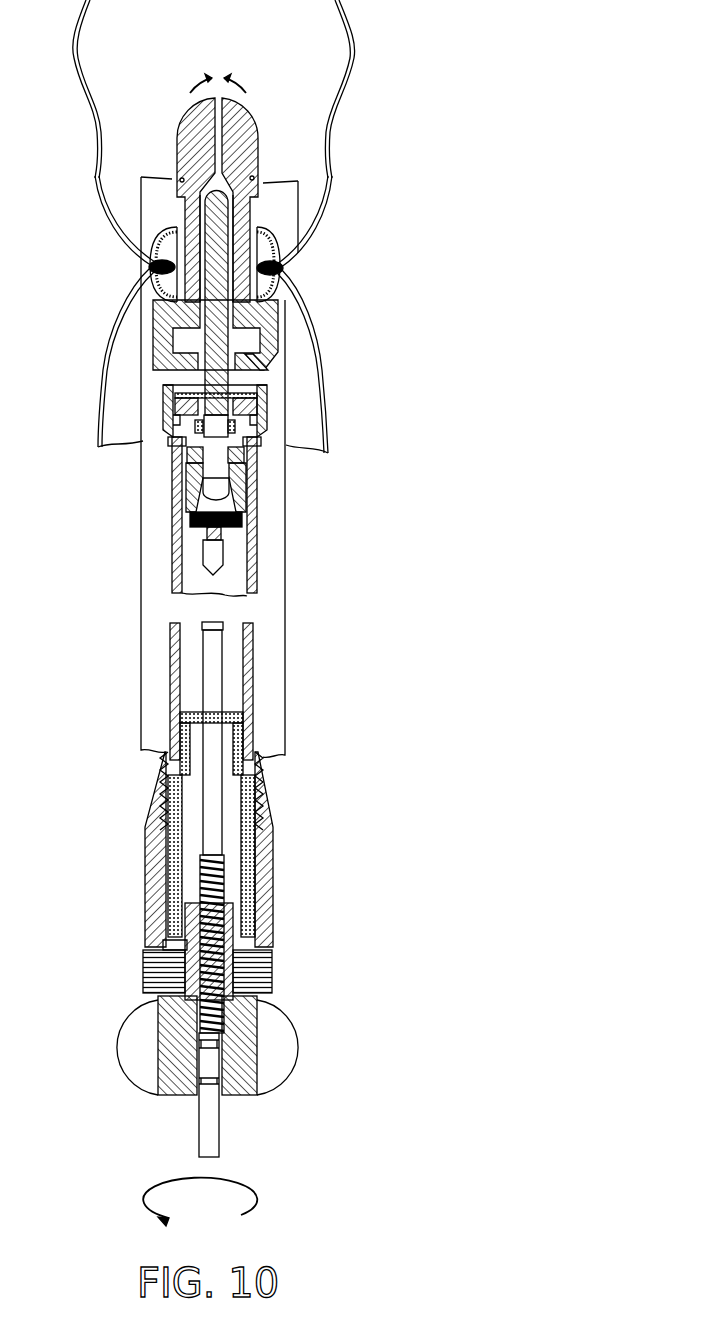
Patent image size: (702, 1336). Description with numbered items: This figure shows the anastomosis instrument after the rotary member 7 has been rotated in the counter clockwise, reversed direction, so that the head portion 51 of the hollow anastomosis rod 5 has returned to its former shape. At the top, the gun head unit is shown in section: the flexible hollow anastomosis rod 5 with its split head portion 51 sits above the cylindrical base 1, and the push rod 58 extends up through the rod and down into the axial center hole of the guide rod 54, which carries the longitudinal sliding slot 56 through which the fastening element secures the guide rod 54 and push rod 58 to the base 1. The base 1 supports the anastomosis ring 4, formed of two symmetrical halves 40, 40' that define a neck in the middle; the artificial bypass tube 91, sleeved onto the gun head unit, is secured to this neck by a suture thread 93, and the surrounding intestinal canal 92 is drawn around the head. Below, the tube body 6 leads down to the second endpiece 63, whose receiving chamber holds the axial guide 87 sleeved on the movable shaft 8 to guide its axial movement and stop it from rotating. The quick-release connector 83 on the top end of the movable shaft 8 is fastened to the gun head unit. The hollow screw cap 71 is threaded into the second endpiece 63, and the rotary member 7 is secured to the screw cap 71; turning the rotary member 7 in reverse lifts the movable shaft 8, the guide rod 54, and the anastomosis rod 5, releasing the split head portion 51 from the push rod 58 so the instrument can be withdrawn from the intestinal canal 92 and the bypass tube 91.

The cylindrical base 1 is at (270, 345).
The anastomosis ring 4 is at (258, 230).
The hollow anastomosis rod 5 is at (246, 217).
The tube body 6 is at (253, 655).
The rotary member 7 is at (275, 1040).
The movable shaft 8 is at (213, 688).
The symmetrical half of anastomosis ring 40 is at (114, 263).
The symmetrical half of anastomosis ring 40' is at (114, 285).
The head portion 51 is at (178, 137).
The guide rod 54 is at (262, 418).
The longitudinal sliding slot 56 is at (175, 380).
The push rod 58 is at (218, 287).
The second endpiece 63 is at (265, 855).
The hollow screw cap 71 is at (270, 968).
The quick-release connector 83 is at (240, 508).
The axial guide 87 is at (265, 793).
The artificial bypass tube 91 is at (286, 548).
The intestinal canal 92 is at (345, 92).
The suture thread 93 is at (280, 268).